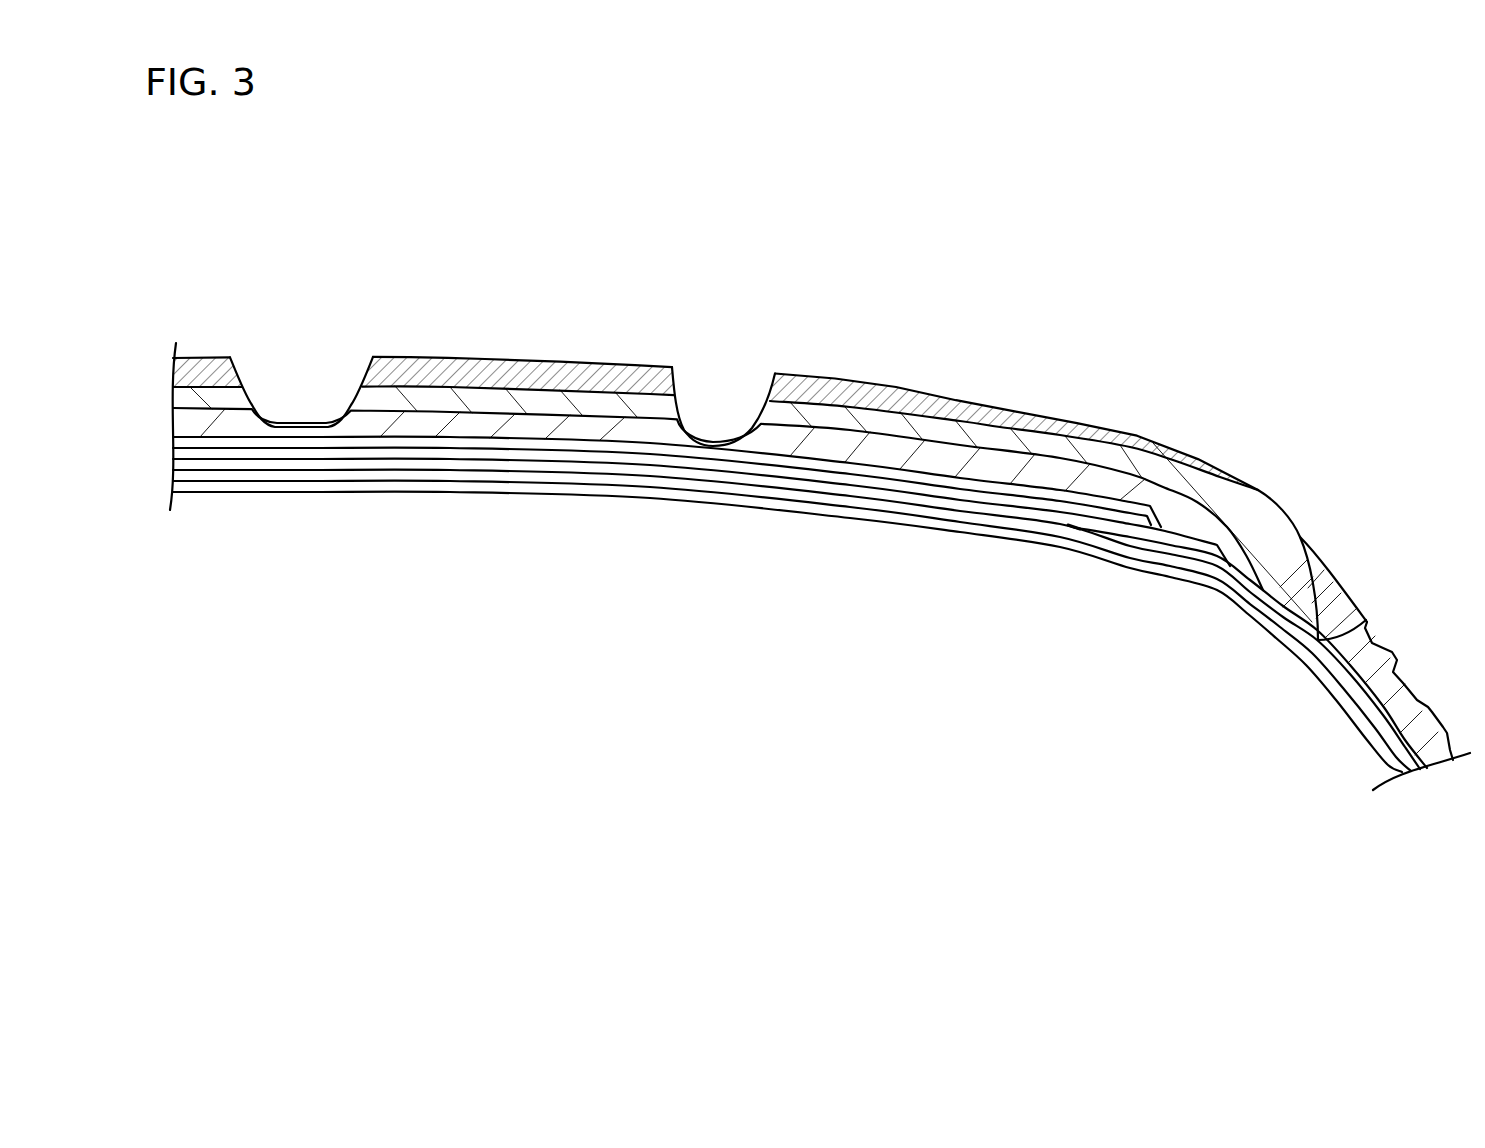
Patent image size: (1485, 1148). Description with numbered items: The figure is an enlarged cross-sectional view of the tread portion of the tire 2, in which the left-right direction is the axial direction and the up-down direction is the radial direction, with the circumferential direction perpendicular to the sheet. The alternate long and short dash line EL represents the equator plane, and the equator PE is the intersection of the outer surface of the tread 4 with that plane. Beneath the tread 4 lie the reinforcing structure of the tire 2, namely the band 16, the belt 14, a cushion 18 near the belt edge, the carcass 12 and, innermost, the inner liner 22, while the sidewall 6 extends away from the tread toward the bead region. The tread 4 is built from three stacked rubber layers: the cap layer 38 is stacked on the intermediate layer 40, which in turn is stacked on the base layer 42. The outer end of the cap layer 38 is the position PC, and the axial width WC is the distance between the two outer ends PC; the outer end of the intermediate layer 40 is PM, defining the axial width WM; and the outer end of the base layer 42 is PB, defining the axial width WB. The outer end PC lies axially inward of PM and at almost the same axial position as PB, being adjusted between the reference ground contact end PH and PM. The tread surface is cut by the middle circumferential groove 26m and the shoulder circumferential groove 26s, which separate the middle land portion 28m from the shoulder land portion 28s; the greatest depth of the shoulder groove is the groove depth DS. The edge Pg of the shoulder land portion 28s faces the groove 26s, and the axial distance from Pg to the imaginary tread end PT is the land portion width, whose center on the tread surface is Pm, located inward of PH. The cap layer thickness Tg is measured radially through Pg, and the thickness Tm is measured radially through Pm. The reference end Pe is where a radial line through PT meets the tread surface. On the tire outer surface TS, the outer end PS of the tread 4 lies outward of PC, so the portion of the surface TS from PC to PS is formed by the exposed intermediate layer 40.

The tire 2 is at (1351, 292).
The tread 4 is at (857, 383).
The sidewall 6 is at (1400, 693).
The carcass 12 is at (406, 484).
The belt 14 is at (546, 478).
The band 16 is at (483, 436).
The cushion 18 is at (1207, 560).
The inner liner 22 is at (242, 494).
The middle circumferential groove 26m is at (252, 390).
The shoulder circumferential groove 26s is at (680, 385).
The middle land portion 28m is at (537, 358).
The shoulder land portion 28s is at (930, 393).
The cap layer 38 is at (175, 367).
The intermediate layer 40 is at (180, 397).
The base layer 42 is at (175, 421).
The axial width of the cap layer WC is at (1260, 712).
The axial width of the base layer WB is at (1262, 697).
The axial width of the intermediate layer WM is at (1317, 640).
The equator plane EL is at (302, 318).
The equator PE is at (303, 357).
The tire outer surface TS is at (590, 362).
The groove depth of the shoulder circumferential groove DS is at (716, 443).
The cap layer thickness of the shoulder land portion on the shoulder circumferential Tg is at (774, 440).
The edge of the shoulder land portion Pg is at (776, 377).
The thickness of the cap layer at the center Pm Tm is at (1020, 462).
The center of the axial width of the shoulder land portion Pm is at (1022, 408).
The reference ground contact end PH is at (1097, 427).
The imaginary tread end PT is at (1257, 488).
The reference end of the tread Pe is at (1260, 490).
The outer end of the cap layer PC is at (1265, 495).
The outer end of the tread PS is at (1301, 537).
The outer end of the base layer PB is at (1268, 586).
The outer end of the intermediate layer PM is at (1365, 617).